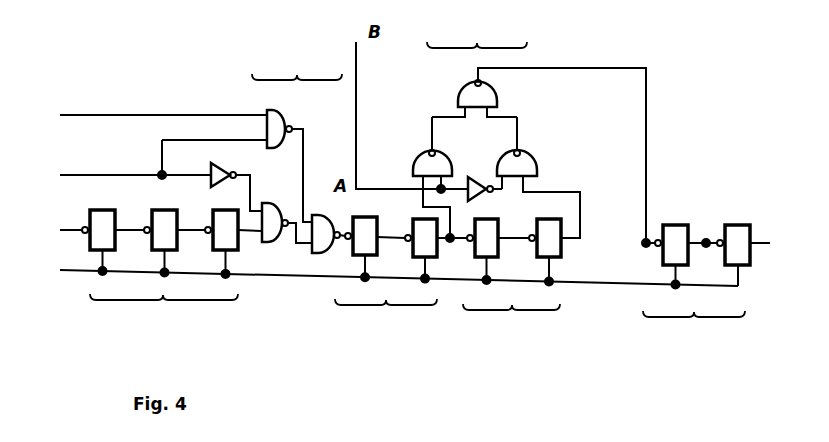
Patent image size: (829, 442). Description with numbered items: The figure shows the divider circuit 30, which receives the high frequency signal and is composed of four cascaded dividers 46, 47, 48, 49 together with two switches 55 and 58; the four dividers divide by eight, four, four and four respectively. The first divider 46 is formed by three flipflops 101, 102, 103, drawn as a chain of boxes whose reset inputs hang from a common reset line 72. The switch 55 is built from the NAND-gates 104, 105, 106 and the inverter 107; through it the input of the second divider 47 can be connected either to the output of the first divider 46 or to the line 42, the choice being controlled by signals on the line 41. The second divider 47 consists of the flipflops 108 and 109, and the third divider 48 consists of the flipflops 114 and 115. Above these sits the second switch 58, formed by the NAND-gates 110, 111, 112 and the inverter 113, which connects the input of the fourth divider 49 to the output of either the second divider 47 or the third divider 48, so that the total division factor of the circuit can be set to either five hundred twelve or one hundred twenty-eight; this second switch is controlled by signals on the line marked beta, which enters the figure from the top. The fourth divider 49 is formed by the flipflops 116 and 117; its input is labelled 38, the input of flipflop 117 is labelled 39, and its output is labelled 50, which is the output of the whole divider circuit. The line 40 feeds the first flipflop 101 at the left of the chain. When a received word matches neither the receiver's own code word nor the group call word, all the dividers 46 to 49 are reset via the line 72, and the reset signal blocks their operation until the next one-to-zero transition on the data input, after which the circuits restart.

The divider circuit 30 is at (209, 69).
The input of divider 49 38 is at (646, 258).
The input of flipflop 117 39 is at (707, 258).
The input line 40 is at (56, 230).
The line 41 is at (150, 162).
The line 42 is at (8, 116).
The first divider 46 is at (164, 313).
The second divider 47 is at (386, 317).
The third divider 48 is at (511, 322).
The fourth divider 49 is at (694, 328).
The output of divider 49 50 is at (774, 243).
The switch 55 is at (297, 66).
The second switch 58 is at (477, 35).
The line 72 is at (384, 273).
The flipflop 101 is at (102, 210).
The flipflop 102 is at (164, 210).
The flipflop 103 is at (226, 210).
The NAND-gate 104 is at (266, 239).
The NAND-gate 105 is at (326, 220).
The NAND-gate 106 is at (298, 116).
The inverter 107 is at (222, 169).
The flipflop 108 is at (365, 217).
The flipflop 109 is at (425, 219).
The NAND-gate 110 is at (417, 162).
The NAND-gate 111 is at (460, 95).
The NAND-gate 112 is at (536, 163).
The inverter 113 is at (478, 171).
The flipflop 114 is at (486, 219).
The flipflop 115 is at (549, 219).
The flipflop 116 is at (676, 225).
The flipflop 117 is at (738, 225).